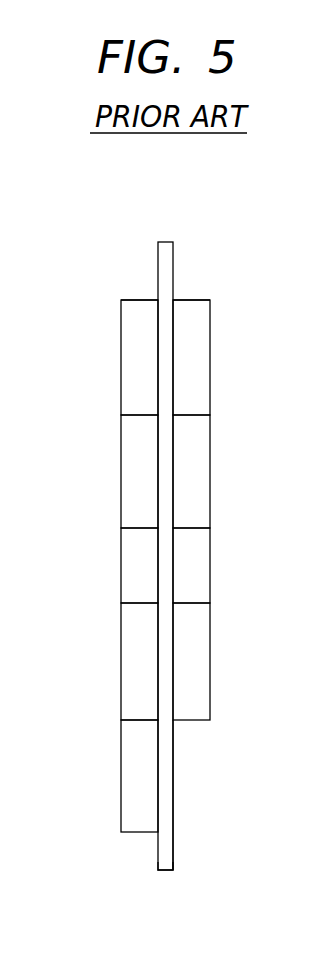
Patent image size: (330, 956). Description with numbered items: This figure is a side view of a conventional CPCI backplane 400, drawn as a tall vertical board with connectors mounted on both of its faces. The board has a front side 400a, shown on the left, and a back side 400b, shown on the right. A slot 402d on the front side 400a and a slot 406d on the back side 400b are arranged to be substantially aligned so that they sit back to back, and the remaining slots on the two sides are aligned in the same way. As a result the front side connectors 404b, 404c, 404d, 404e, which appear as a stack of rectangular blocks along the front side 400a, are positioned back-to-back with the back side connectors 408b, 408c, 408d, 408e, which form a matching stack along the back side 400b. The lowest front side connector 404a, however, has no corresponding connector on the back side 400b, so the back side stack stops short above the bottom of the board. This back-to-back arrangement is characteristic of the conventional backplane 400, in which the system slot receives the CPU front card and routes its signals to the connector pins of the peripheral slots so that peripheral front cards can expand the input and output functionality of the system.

The conventional backplane 400 is at (167, 242).
The front side 400a is at (157, 855).
The back side 400b is at (173, 785).
The slot 402d is at (136, 300).
The slot 406d is at (190, 300).
The front side connector 404a is at (121, 775).
The front side connector 404b is at (121, 645).
The front side connector 404c is at (121, 548).
The front side connector 404d is at (121, 455).
The front side connector 404e is at (121, 340).
The back side connector 408b is at (210, 645).
The back side connector 408c is at (210, 548).
The back side connector 408d is at (210, 458).
The back side connector 408e is at (210, 340).